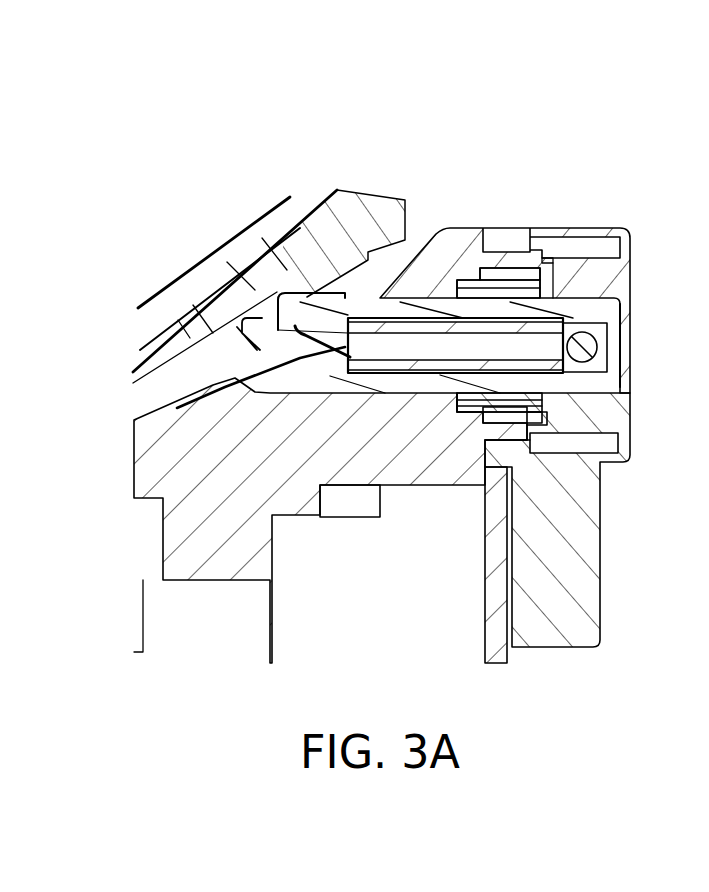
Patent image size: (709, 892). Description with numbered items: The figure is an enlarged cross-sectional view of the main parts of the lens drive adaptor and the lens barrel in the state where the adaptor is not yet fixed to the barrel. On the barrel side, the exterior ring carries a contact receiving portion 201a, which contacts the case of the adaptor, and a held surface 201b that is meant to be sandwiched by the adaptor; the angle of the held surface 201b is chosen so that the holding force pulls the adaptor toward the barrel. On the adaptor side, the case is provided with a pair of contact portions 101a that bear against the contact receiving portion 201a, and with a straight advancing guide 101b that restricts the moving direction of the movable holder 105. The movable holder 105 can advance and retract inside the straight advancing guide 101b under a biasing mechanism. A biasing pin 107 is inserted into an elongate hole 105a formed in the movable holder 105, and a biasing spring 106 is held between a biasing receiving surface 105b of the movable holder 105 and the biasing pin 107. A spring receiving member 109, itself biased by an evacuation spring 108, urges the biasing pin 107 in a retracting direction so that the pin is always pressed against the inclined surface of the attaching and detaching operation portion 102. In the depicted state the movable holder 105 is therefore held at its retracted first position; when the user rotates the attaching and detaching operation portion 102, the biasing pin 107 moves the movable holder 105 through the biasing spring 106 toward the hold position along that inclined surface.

The contact portions 101a is at (213, 397).
The straight advancing guide 101b is at (435, 298).
The attaching and detaching operation portion 102 is at (620, 288).
The movable holder 105 is at (260, 350).
The elongate hole 105a is at (585, 346).
The biasing receiving surface 105b is at (295, 326).
The biasing spring 106 is at (368, 335).
The biasing pin 107 is at (565, 342).
The evacuation spring 108 is at (482, 297).
The spring receiving member 109 is at (532, 417).
The contact receiving portion 201a is at (177, 408).
The held surface 201b is at (216, 397).